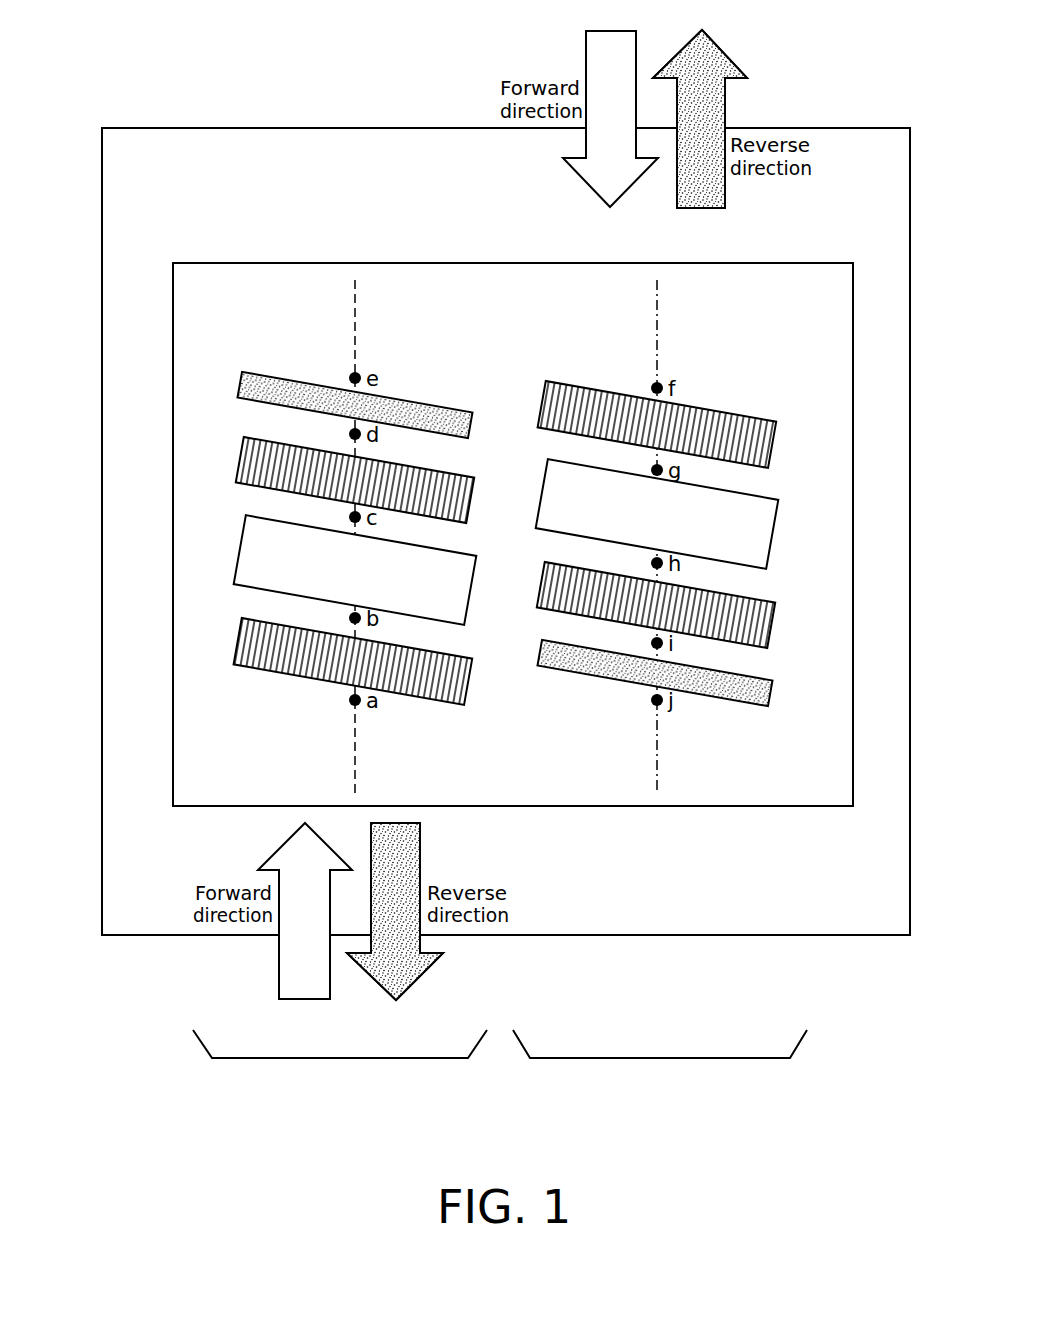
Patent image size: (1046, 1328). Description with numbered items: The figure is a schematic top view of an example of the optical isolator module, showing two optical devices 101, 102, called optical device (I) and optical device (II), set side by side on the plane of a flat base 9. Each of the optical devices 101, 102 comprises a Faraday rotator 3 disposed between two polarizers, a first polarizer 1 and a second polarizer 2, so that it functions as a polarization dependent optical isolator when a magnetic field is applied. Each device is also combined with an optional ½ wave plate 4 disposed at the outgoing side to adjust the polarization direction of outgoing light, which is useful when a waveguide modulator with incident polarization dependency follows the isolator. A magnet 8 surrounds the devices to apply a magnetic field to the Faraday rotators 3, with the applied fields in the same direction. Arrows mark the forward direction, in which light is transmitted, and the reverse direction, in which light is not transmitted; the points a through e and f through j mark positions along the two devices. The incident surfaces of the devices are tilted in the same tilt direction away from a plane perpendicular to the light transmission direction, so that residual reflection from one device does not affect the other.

The first polarizer 1 is at (240, 640).
The second polarizer 2 is at (240, 462).
The Faraday rotator 3 is at (240, 552).
The ½ wave plate 4 is at (240, 382).
The magnet 8 is at (228, 262).
The flat base 9 is at (150, 780).
The optical device 101 is at (340, 1058).
The optical device 102 is at (662, 1058).